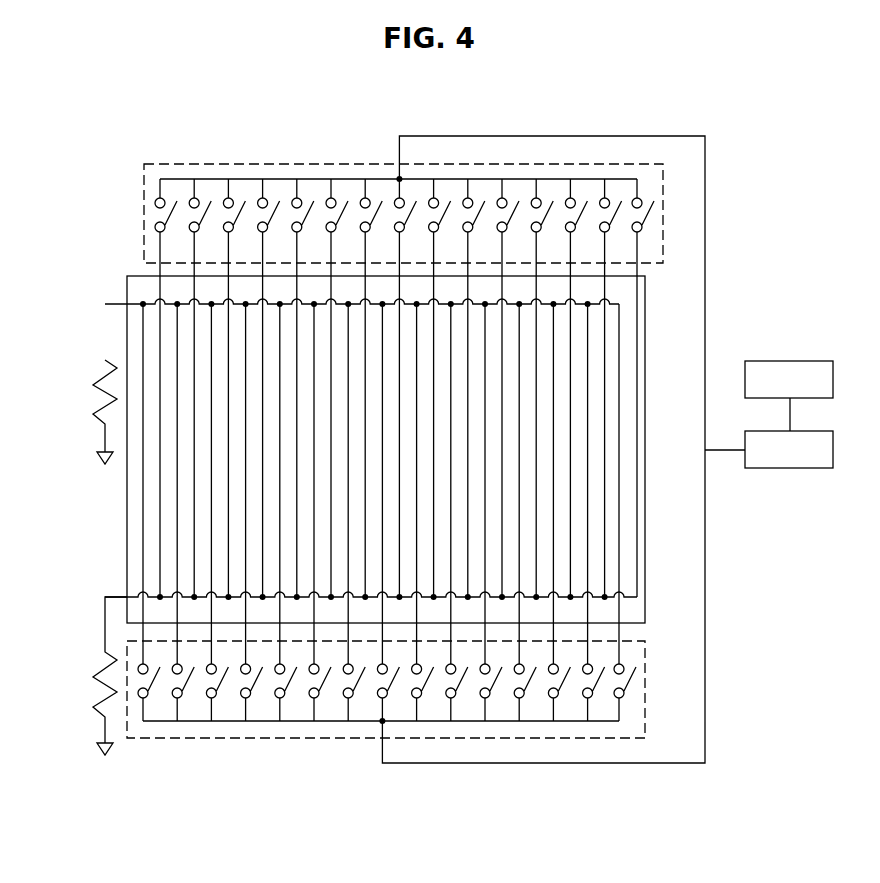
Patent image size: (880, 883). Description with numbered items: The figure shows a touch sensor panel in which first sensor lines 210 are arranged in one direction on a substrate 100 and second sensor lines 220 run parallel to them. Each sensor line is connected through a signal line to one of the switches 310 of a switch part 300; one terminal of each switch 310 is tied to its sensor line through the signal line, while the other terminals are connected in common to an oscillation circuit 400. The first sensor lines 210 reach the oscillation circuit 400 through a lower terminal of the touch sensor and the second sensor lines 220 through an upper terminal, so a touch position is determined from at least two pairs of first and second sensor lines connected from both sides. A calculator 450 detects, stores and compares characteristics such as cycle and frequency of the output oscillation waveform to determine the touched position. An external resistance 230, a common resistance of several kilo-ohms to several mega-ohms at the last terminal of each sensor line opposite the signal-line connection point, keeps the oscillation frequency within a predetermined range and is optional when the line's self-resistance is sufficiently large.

The substrate 100 is at (645, 309).
The first sensor lines 210 is at (617, 553).
The second sensor lines 220 is at (634, 497).
The external resistance 230 is at (97, 398).
The switch part 300 is at (325, 164).
The switches 310 is at (227, 225).
The oscillation circuit 400 is at (789, 449).
The calculator 450 is at (789, 396).